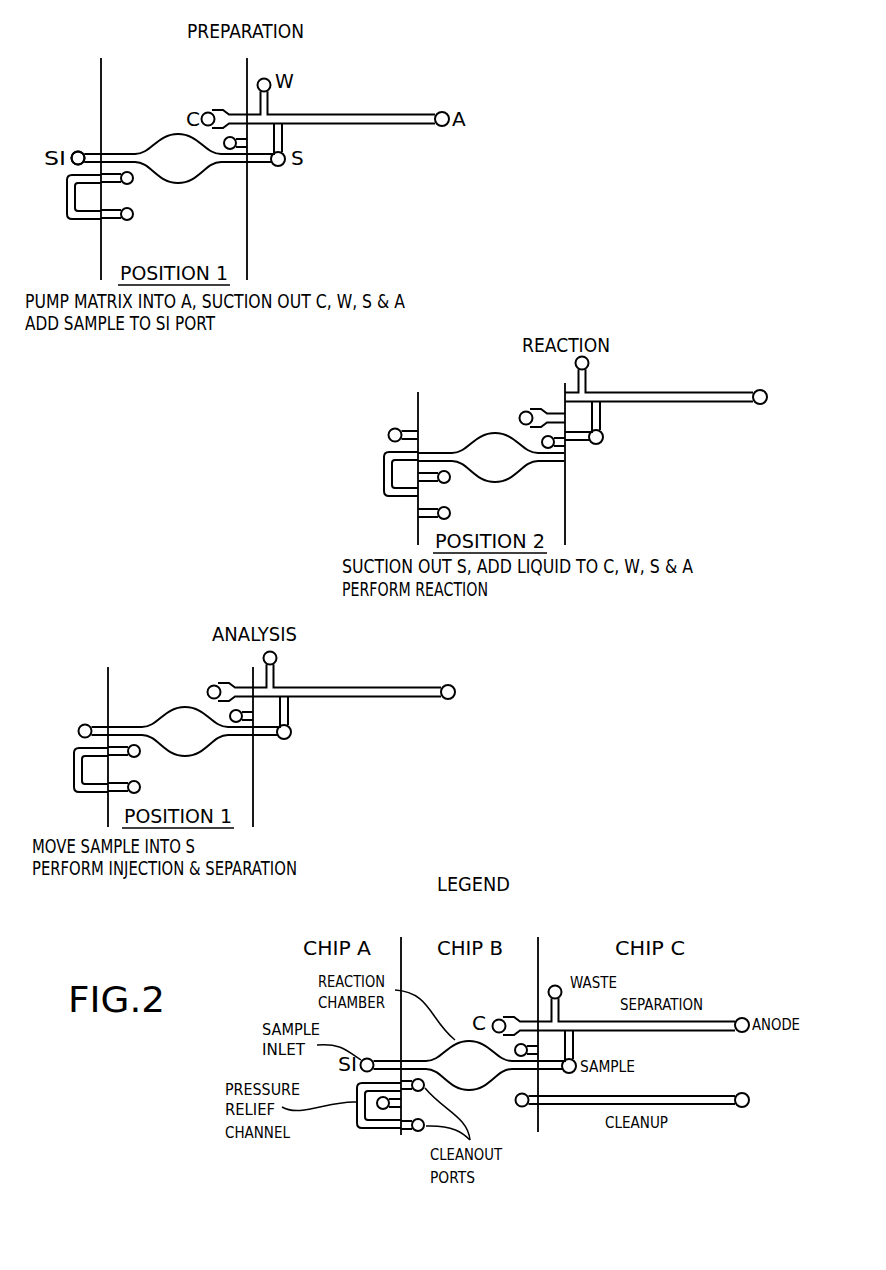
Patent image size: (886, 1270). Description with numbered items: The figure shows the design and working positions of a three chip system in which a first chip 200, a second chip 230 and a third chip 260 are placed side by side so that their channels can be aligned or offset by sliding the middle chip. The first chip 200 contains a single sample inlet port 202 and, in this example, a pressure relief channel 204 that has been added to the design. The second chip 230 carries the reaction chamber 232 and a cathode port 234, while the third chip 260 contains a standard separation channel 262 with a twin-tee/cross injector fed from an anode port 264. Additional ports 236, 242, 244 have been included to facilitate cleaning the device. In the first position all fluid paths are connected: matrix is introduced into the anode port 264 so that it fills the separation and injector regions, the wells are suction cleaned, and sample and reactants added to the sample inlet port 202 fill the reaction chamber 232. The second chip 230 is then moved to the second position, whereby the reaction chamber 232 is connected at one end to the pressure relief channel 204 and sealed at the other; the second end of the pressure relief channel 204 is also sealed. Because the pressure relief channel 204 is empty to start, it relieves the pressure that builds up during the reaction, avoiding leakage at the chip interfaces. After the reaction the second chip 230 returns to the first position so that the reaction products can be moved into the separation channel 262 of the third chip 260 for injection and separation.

The first chip (chip A) 200 is at (58, 151).
The sample inlet port 202 is at (77, 151).
The pressure relief channel 204 is at (67, 196).
The second chip (chip B) 230 is at (181, 157).
The reaction chamber 232 is at (180, 157).
The cathode port 234 is at (207, 112).
The cleaning port 236 is at (229, 150).
The cleaning port 242 is at (133, 182).
The cleaning port 244 is at (133, 220).
The third chip (chip C) 260 is at (375, 111).
The separation channel 262 is at (362, 113).
The anode port 264 is at (447, 111).